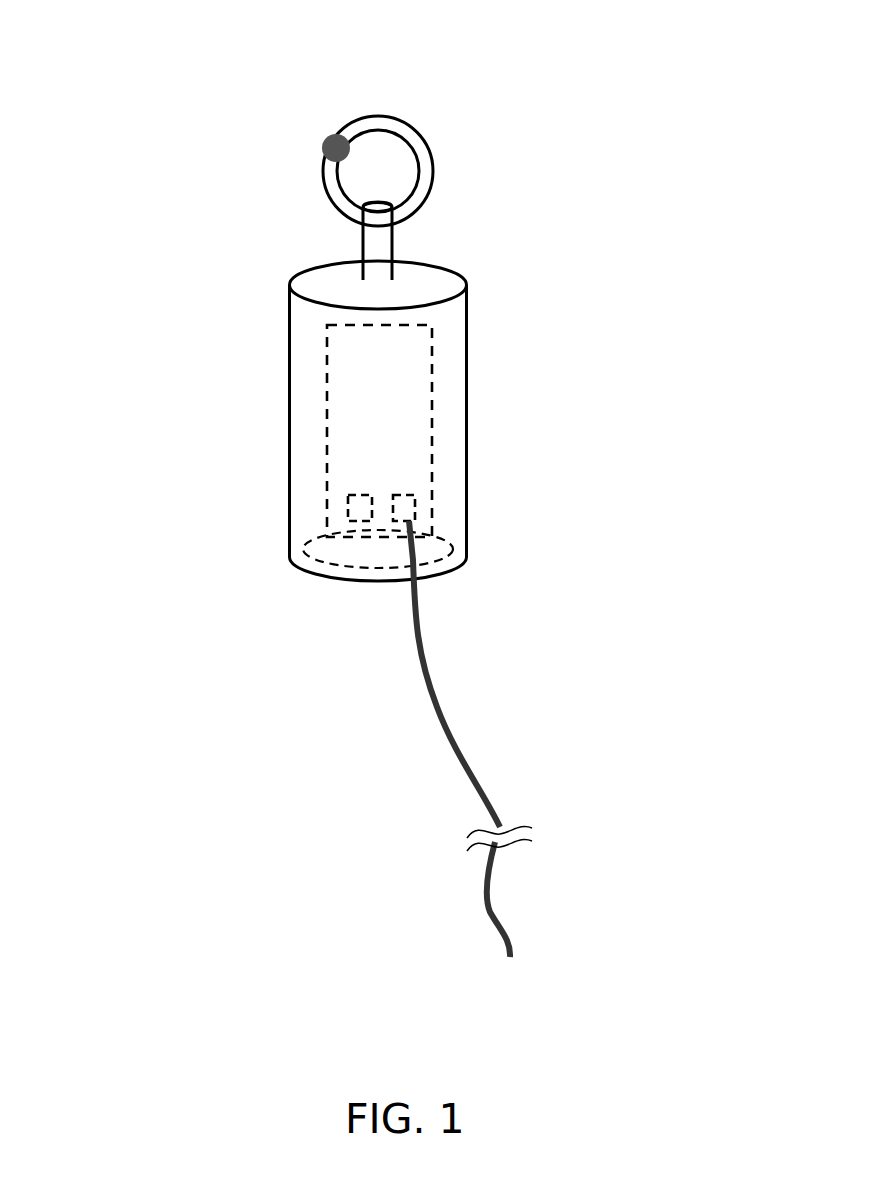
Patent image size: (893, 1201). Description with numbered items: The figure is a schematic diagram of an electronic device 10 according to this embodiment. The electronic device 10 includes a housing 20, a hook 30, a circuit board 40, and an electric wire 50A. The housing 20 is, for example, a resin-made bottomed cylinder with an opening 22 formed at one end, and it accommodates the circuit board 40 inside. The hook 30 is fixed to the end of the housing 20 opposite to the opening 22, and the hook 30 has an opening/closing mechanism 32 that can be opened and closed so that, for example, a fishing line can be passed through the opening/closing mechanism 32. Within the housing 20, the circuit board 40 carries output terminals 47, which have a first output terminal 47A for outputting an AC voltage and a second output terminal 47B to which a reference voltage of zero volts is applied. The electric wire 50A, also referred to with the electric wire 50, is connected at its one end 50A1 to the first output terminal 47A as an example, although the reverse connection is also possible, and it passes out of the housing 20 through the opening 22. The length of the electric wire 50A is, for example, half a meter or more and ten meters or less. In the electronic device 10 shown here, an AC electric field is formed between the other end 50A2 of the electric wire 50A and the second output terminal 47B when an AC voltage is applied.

The electronic device 10 is at (662, 81).
The housing 20 is at (308, 330).
The opening 22 is at (350, 582).
The hook 30 is at (324, 195).
The opening/closing mechanism 32 is at (330, 150).
The circuit board 40 is at (411, 409).
The output terminals 47 is at (116, 435).
The first output terminal 47A is at (403, 492).
The second output terminal 47B is at (347, 507).
The cable 50 is at (577, 717).
The electric wire 50A is at (438, 702).
The one end of the electric wire 50A1 is at (405, 523).
The other end of the electric wire 50A2 is at (512, 956).